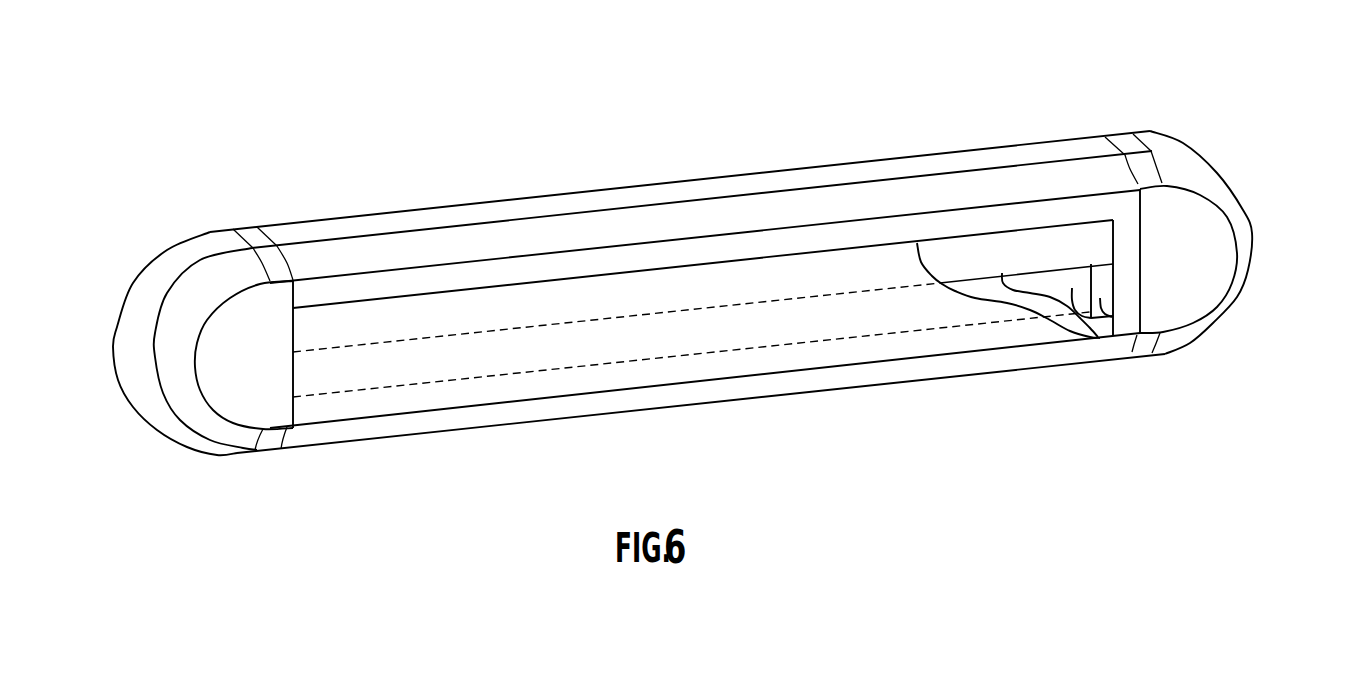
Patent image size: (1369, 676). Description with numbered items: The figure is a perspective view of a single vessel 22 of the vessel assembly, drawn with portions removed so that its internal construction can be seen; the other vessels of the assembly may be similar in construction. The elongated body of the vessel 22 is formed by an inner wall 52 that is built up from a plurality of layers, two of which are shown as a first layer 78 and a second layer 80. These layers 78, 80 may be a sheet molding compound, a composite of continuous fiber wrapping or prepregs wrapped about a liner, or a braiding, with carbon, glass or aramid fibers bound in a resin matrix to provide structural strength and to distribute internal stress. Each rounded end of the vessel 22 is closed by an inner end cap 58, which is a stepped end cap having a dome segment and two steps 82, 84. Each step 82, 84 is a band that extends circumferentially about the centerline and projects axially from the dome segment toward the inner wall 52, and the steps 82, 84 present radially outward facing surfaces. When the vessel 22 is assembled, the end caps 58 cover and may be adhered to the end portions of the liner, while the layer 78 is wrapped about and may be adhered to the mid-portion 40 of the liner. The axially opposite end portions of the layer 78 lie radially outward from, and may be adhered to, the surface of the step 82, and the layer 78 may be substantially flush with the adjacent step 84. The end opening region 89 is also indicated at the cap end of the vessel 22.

The vessel 22 is at (704, 267).
The inner wall 52 is at (608, 416).
The inner end cap 58 is at (132, 285).
The end opening 89 is at (1247, 281).
The step 84 is at (1122, 270).
The layer 80 is at (980, 312).
The layer 78 is at (1040, 303).
The mid-portion 40 is at (1076, 312).
The step 82 is at (1113, 319).